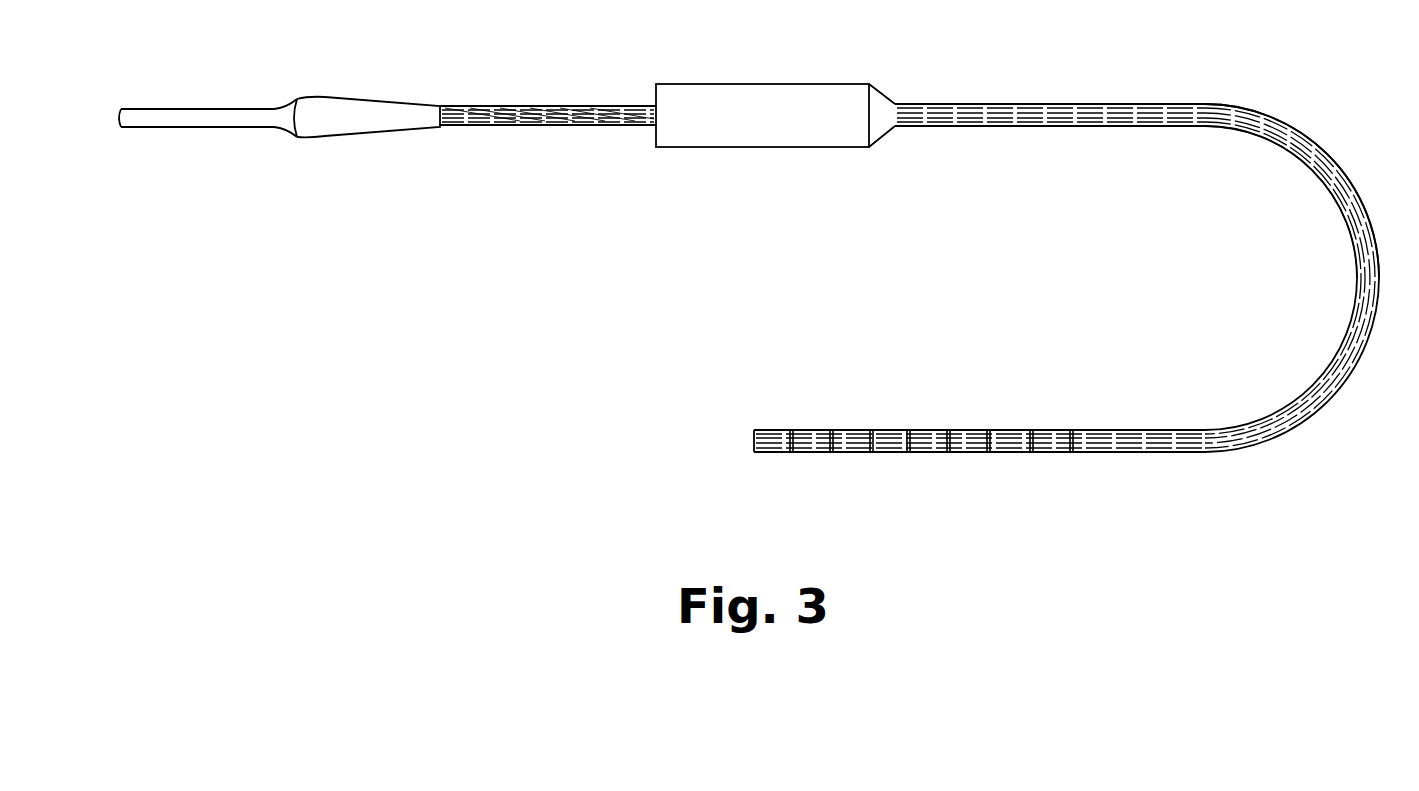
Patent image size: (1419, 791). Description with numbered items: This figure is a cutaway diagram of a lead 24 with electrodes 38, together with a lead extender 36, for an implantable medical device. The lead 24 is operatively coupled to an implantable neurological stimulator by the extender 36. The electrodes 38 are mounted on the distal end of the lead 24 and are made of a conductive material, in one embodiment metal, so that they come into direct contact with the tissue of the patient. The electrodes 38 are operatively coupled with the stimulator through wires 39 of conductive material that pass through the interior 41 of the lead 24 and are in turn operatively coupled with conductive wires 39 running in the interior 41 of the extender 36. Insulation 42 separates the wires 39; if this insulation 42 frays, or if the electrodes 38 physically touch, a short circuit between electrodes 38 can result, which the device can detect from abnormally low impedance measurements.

The lead 24 is at (1354, 228).
The extender 36 is at (542, 127).
The electrodes 38 is at (1068, 456).
The wires 39 is at (575, 109).
The interior 41 is at (1272, 121).
The insulation 42 is at (1330, 153).